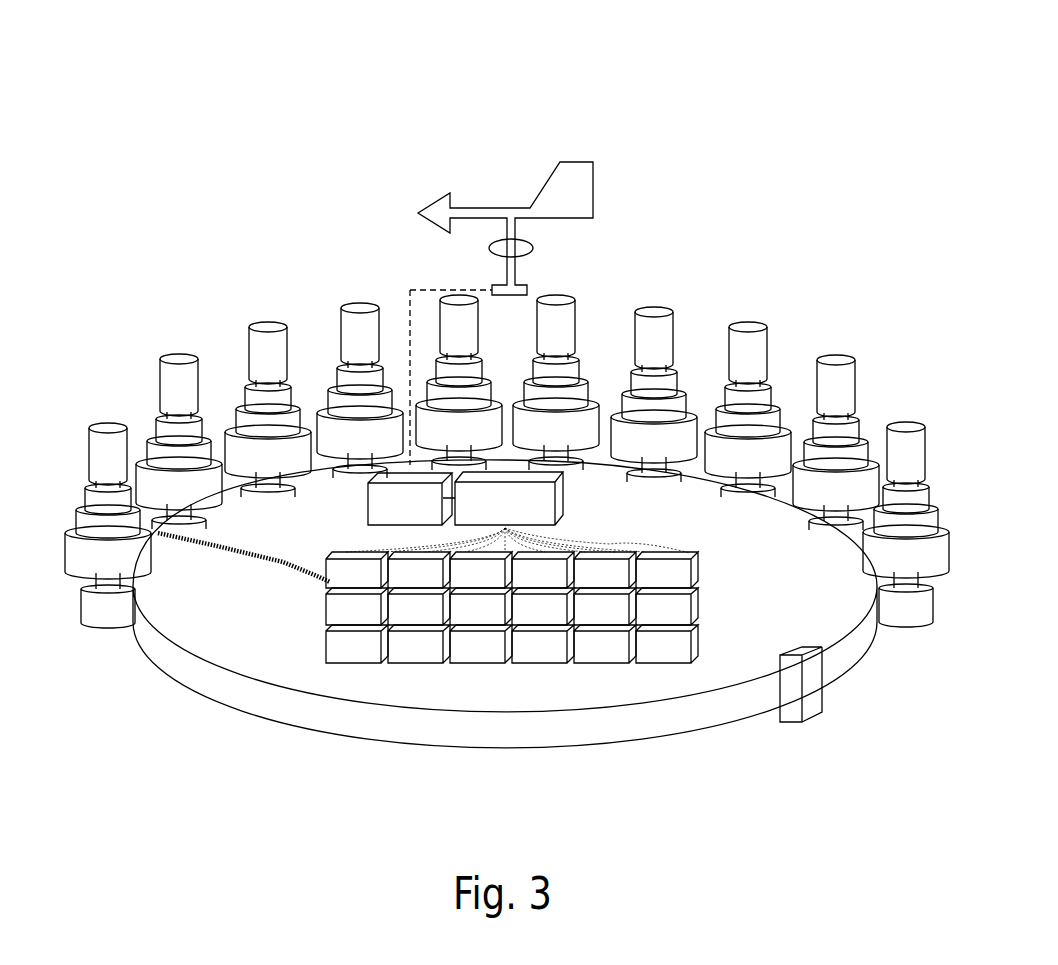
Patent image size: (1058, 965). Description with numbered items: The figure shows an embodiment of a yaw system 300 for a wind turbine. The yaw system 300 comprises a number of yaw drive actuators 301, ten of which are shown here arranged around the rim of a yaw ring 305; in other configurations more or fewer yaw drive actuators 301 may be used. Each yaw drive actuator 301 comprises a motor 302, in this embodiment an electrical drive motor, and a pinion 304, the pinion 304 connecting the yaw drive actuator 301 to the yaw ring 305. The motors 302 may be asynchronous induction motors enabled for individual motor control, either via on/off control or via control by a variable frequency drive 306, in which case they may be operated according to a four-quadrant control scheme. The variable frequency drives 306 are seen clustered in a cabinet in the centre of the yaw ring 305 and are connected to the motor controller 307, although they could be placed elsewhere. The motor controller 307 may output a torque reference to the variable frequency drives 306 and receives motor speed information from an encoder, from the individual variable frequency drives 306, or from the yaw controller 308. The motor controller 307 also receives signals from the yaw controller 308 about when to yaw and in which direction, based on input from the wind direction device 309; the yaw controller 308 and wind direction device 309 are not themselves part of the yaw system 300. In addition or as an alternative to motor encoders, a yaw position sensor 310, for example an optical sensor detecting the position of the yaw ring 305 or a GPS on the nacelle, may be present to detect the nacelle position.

The yaw system 300 is at (165, 176).
The yaw drive actuator 301 is at (927, 507).
The motor 302 is at (100, 440).
The pinion 304 is at (107, 603).
The yaw ring 305 is at (688, 712).
The variable frequency drive 306 is at (358, 572).
The motor controller 307 is at (512, 498).
The yaw controller 308 is at (387, 500).
The wind direction device 309 is at (567, 175).
The yaw position sensor 310 is at (812, 662).